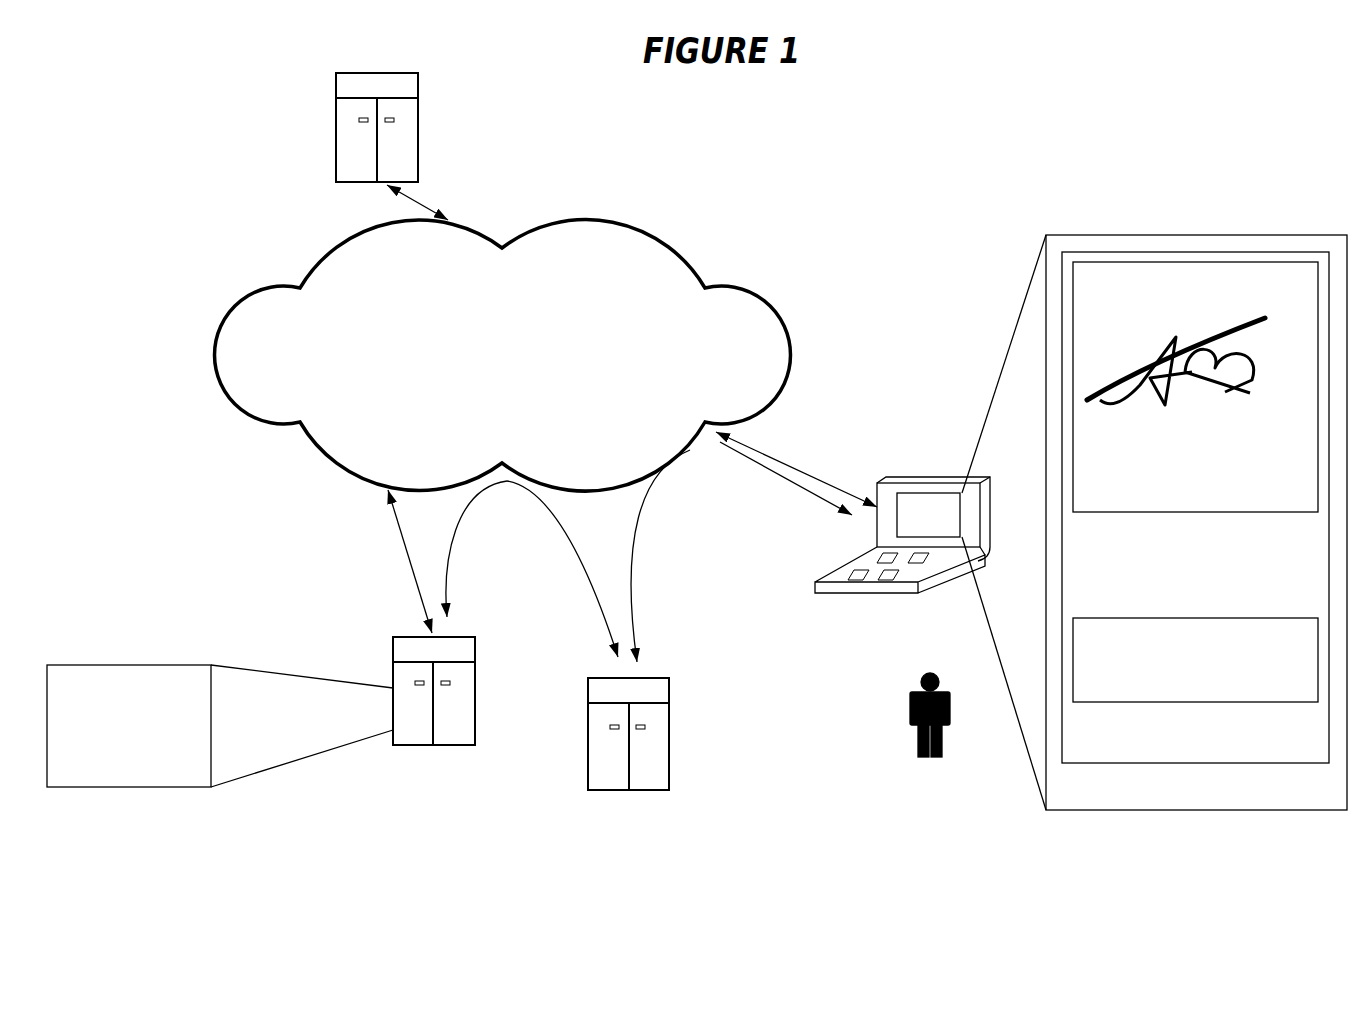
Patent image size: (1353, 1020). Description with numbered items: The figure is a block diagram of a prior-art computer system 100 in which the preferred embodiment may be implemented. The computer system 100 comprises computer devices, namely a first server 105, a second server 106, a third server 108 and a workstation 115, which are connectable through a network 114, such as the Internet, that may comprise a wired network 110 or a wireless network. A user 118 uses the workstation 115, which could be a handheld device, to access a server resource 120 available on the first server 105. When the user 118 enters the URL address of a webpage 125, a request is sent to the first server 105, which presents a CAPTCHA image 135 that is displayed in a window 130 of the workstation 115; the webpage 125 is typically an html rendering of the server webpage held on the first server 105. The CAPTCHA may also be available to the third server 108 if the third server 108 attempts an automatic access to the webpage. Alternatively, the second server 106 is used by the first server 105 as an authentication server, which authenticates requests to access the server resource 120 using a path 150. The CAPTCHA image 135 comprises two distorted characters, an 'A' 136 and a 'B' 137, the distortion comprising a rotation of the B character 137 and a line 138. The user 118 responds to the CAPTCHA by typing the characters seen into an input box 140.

The computer system 100 is at (398, 192).
The first server 105 is at (415, 745).
The second server 106 is at (670, 781).
The third server 108 is at (418, 128).
The wired network 110 is at (397, 528).
The network 114 is at (225, 322).
The workstation 115 is at (855, 593).
The user 118 is at (915, 728).
The server resource 120 is at (118, 787).
The webpage 125 is at (1330, 540).
The window 130 is at (1072, 818).
The CAPTCHA image 135 is at (1128, 509).
The character 'A' 136 is at (1152, 408).
The character 'B' 137 is at (1237, 402).
The line 138 is at (1260, 322).
The input box 140 is at (1153, 618).
The path 150 is at (563, 537).